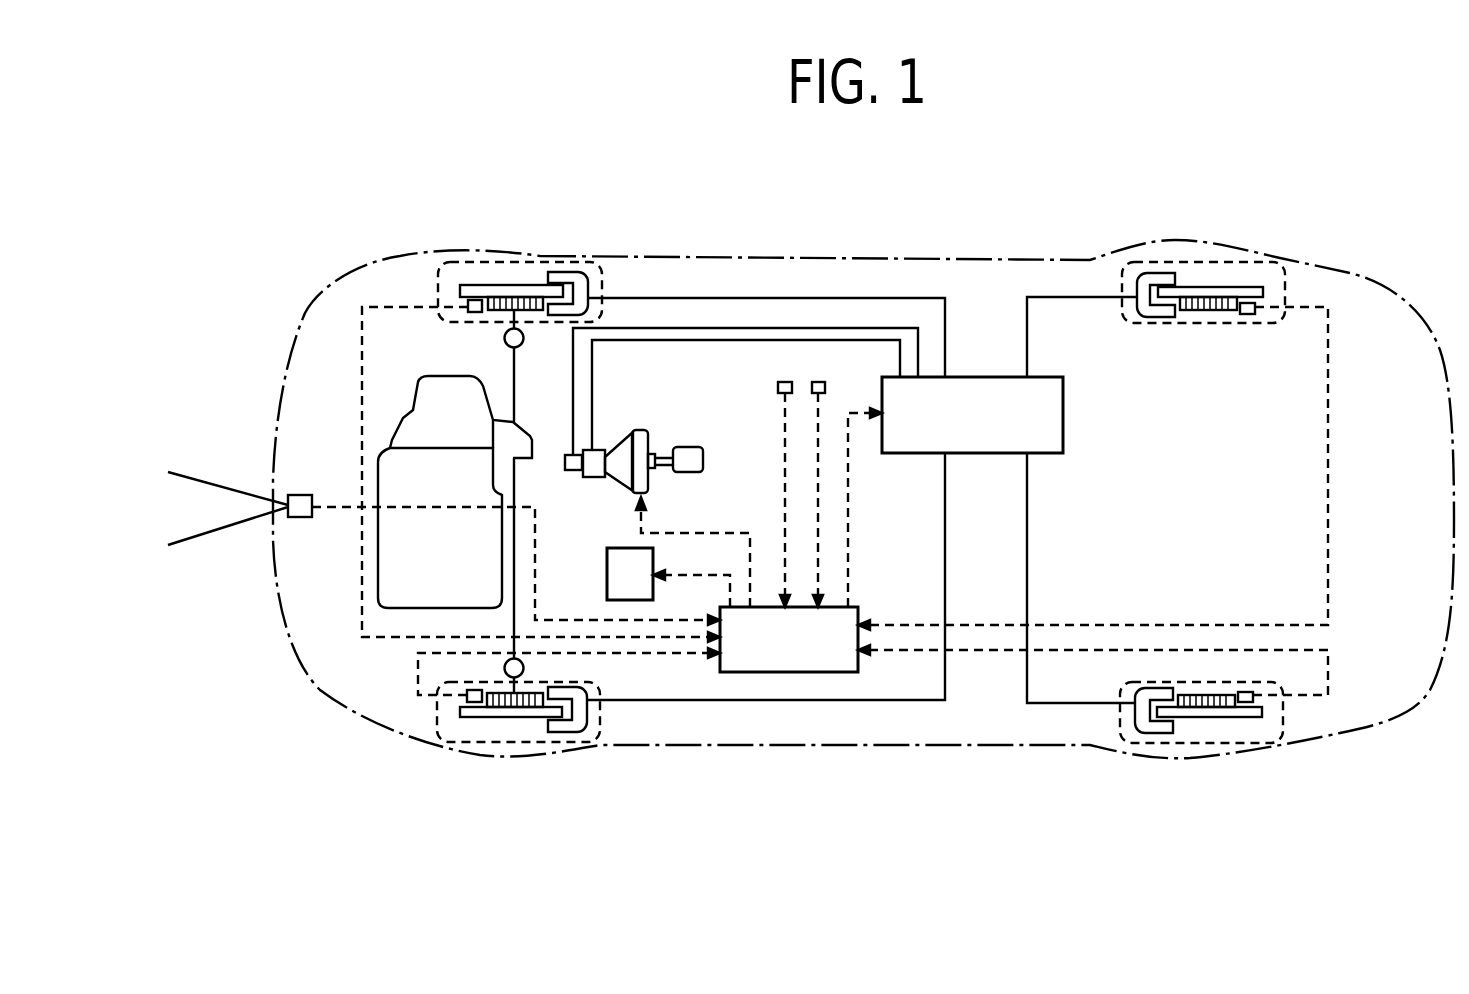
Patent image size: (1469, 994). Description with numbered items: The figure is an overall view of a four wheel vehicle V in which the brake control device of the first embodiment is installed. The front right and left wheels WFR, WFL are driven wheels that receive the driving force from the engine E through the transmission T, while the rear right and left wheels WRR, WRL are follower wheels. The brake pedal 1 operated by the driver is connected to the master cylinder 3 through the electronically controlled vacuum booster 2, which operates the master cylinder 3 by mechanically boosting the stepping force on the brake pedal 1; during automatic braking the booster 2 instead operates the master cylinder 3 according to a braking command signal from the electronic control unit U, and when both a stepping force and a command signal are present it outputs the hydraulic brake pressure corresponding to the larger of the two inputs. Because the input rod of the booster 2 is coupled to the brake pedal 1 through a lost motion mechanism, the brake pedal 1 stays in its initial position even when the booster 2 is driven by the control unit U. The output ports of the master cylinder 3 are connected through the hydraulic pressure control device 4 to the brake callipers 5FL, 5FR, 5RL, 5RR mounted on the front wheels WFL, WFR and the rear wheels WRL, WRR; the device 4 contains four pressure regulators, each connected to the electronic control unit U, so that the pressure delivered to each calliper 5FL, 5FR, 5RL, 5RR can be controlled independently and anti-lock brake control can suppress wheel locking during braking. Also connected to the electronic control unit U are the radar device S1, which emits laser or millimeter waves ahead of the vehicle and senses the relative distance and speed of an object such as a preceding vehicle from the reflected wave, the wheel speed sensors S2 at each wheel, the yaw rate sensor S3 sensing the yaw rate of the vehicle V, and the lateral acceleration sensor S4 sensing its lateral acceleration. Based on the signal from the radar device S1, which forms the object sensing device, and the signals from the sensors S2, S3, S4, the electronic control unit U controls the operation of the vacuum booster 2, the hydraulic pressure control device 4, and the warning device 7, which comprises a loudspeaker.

The vehicle V is at (858, 218).
The front right wheel WFR is at (487, 262).
The front left wheel WFL is at (487, 747).
The rear right wheel WRR is at (1190, 260).
The rear left wheel WRL is at (1187, 745).
The brake calliper 5FR is at (566, 268).
The brake calliper 5FL is at (575, 750).
The brake calliper 5RR is at (1133, 265).
The brake calliper 5RL is at (1140, 742).
The wheel speed sensor S2 is at (1258, 782).
The radar device S1 is at (300, 520).
The yaw rate sensor S3 is at (780, 382).
The lateral acceleration sensor S4 is at (837, 355).
The transmission T is at (461, 417).
The engine E is at (440, 528).
The brake pedal 1 is at (703, 462).
The electronically controlled vacuum booster 2 is at (636, 492).
The master cylinder 3 is at (573, 472).
The hydraulic pressure control device 4 is at (955, 492).
The warning device 7 is at (668, 577).
The electronic control unit U is at (789, 639).